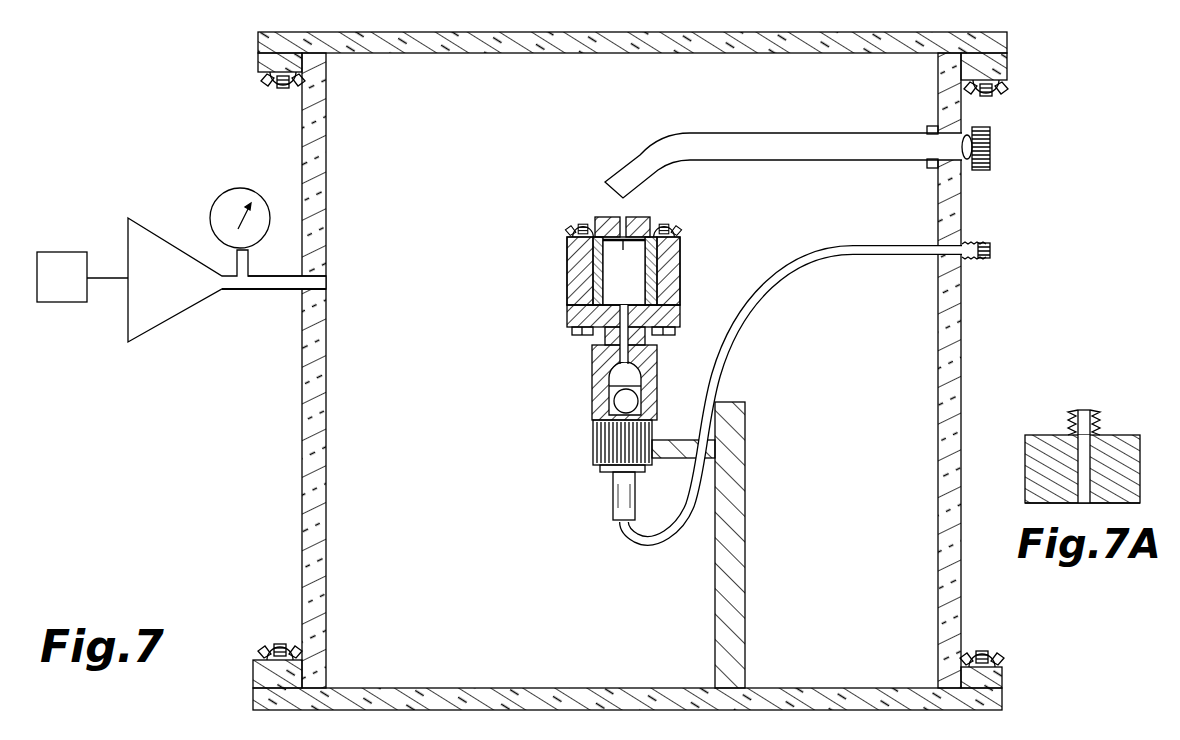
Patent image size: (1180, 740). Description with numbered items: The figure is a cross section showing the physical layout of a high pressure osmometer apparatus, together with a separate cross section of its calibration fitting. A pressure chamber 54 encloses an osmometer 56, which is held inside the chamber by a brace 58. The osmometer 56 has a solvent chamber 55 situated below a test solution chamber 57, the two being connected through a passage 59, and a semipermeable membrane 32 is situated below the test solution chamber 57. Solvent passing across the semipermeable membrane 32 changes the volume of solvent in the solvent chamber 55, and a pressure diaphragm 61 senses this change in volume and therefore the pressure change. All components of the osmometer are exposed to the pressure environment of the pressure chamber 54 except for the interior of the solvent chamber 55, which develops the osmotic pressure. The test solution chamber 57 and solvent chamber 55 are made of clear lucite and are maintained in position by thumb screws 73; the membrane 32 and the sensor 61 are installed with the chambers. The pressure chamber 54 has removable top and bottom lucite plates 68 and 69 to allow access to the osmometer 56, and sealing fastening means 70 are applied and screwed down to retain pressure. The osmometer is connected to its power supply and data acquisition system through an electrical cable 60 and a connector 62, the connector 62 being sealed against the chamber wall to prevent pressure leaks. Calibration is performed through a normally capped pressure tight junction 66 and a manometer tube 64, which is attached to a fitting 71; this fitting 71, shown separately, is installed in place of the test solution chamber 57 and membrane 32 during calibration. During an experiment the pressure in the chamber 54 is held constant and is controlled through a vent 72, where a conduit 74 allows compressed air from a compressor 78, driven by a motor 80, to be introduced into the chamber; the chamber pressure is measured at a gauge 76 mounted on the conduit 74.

In FIG. 7, the semipermeable membrane 32 is at (592, 336).
In FIG. 7, the pressure chamber 54 is at (298, 489).
In FIG. 7, the solvent chamber 55 is at (608, 380).
In FIG. 7, the osmometer 56 is at (585, 370).
In FIG. 7, the test solution chamber 57 is at (608, 270).
In FIG. 7, the brace 58 is at (750, 553).
In FIG. 7, the passage 59 is at (680, 312).
In FIG. 7, the electrical cable 60 is at (826, 257).
In FIG. 7, the pressure diaphragm 61 is at (609, 394).
In FIG. 7, the connector 62 is at (985, 260).
In FIG. 7, the manometer tube 64 is at (822, 161).
In FIG. 7, the pressure tight junction 66 is at (975, 168).
In FIG. 7, the top lucite plate 68 is at (803, 55).
In FIG. 7, the bottom lucite plate 69 is at (822, 691).
In FIG. 7, the sealing fastening means 70 is at (288, 96).
In FIG. 7A, the fitting 71 is at (1029, 436).
In FIG. 7, the vent 72 is at (327, 283).
In FIG. 7, the thumb screws 73 is at (683, 222).
In FIG. 7, the conduit 74 is at (225, 290).
In FIG. 7, the gauge 76 is at (227, 192).
In FIG. 7, the compressor 78 is at (152, 330).
In FIG. 7, the motor 80 is at (87, 296).